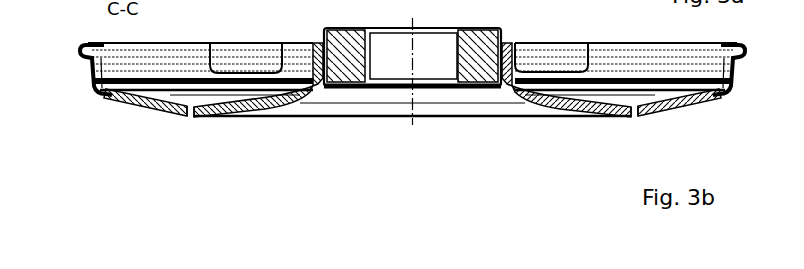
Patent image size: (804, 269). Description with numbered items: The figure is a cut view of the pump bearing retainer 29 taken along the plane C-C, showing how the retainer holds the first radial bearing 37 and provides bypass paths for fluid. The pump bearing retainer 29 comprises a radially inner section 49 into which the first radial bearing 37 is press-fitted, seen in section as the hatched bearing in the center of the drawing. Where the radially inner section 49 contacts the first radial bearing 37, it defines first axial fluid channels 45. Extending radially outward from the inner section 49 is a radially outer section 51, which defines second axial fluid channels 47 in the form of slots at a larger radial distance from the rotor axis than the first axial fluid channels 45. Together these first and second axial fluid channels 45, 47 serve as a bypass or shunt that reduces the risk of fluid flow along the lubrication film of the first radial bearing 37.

The pump bearing retainer 29 is at (135, 153).
The first radial bearing 37 is at (483, 48).
The first axial fluid channels 45 is at (315, 30).
The second axial fluid channels 47 is at (192, 128).
The radially inner section 49 is at (515, 100).
The radially outer section 51 is at (157, 110).